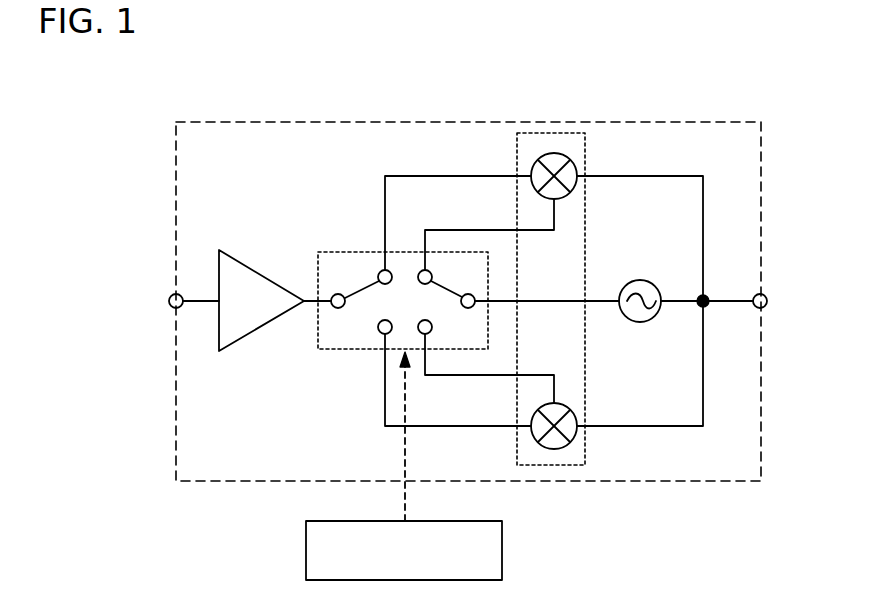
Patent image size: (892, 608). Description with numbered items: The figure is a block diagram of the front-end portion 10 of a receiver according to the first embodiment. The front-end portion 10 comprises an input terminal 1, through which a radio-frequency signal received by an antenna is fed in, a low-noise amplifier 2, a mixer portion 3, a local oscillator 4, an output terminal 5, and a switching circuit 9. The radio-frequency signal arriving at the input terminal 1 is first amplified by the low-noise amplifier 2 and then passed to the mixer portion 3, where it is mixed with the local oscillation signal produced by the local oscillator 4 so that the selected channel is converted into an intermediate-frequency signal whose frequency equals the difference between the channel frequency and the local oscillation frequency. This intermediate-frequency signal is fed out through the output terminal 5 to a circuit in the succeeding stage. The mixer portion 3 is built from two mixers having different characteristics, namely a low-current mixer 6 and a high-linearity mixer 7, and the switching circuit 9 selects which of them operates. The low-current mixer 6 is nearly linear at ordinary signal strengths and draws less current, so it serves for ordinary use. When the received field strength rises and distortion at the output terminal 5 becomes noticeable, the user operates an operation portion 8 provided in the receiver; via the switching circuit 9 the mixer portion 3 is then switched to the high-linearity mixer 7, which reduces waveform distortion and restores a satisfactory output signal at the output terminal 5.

The input terminal 1 is at (169, 295).
The low-noise amplifier 2 is at (260, 330).
The mixer portion 3 is at (587, 149).
The local oscillator 4 is at (633, 322).
The output terminal 5 is at (767, 295).
The low-current mixer 6 is at (535, 162).
The high-linearity mixer 7 is at (538, 440).
The operation portion 8 is at (502, 548).
The switching circuit 9 is at (359, 252).
The front-end portion 10 is at (640, 121).